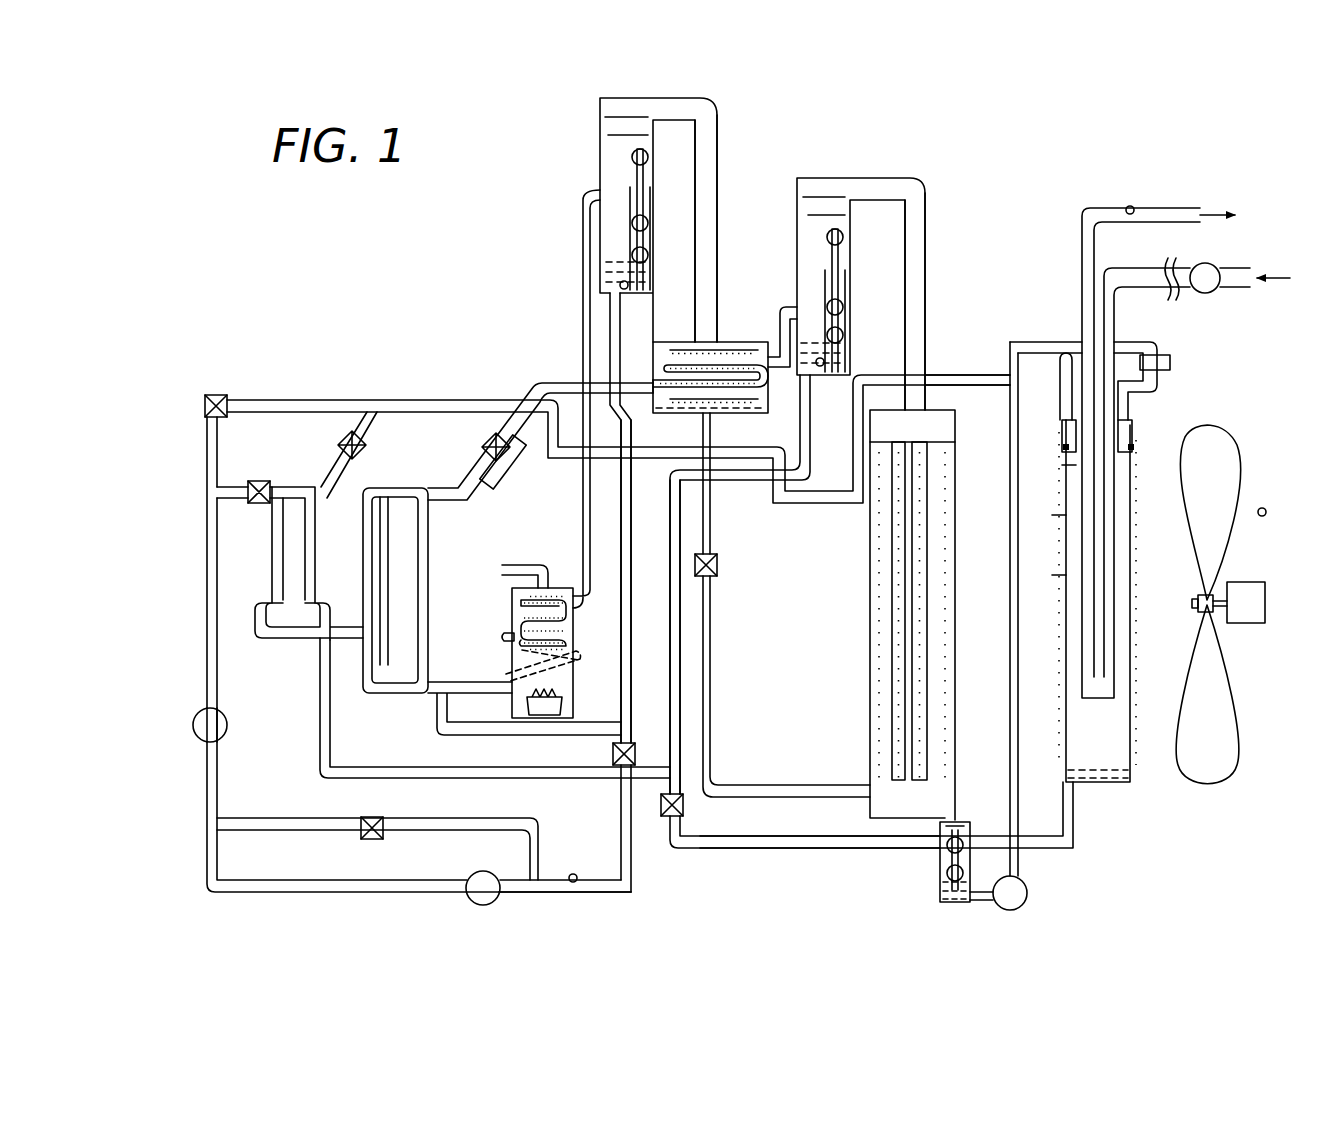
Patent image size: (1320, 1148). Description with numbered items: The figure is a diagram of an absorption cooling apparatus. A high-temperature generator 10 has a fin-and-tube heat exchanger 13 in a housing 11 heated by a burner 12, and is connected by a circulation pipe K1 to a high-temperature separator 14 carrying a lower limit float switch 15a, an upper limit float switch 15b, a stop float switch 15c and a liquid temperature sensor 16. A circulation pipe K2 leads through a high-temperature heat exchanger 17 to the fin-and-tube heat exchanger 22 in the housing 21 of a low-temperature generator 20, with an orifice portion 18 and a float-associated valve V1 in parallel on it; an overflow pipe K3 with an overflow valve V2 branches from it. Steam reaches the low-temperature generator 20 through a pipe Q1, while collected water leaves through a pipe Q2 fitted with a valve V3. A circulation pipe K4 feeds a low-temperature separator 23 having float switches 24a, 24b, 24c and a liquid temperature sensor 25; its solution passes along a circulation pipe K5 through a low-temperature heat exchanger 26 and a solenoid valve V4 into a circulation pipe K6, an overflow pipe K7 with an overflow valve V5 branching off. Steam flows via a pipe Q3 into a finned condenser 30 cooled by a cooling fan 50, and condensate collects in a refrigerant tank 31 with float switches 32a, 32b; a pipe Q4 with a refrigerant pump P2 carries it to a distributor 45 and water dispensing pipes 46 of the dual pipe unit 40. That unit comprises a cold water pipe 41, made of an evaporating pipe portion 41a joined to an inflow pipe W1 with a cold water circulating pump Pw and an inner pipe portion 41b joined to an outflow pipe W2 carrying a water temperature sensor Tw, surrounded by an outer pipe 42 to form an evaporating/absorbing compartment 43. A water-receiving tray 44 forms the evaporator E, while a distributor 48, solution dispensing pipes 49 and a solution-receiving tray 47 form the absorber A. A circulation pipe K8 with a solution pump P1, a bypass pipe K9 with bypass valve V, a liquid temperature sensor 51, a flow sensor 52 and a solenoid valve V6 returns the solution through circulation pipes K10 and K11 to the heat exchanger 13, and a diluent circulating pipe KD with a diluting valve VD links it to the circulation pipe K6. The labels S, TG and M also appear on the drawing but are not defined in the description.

The high-temperature generator 10 is at (520, 617).
The housing 11 is at (506, 598).
The burner 12 is at (526, 710).
The fin-and-tube heat exchanger 13 is at (506, 636).
The high-temperature separator 14 is at (597, 125).
The lower limit float switch 15a is at (648, 255).
The upper limit float switch 15b is at (648, 223).
The stop float switch 15c is at (648, 157).
The liquid temperature sensor 16 is at (626, 297).
The high-temperature heat exchanger 17 is at (430, 553).
The orifice portion 18 is at (512, 470).
The low-temperature generator 20 is at (710, 341).
The housing 21 is at (652, 376).
The fin-and-tube heat exchanger 22 is at (666, 342).
The low-temperature separator 23 is at (796, 176).
The lower limit float switch 24a is at (843, 335).
The upper limit float switch 24b is at (843, 307).
The stop float switch 24c is at (843, 237).
The liquid temperature sensor 25 is at (808, 380).
The low-temperature heat exchanger 26 is at (318, 540).
The condenser 30 is at (945, 406).
The refrigerant tank 31 is at (940, 890).
The lower limit float switch 32a is at (946, 873).
The upper limit float switch 32b is at (960, 820).
The dual pipe unit 40 is at (1107, 471).
The cold water pipe 41 is at (1120, 320).
The evaporating pipe portion 41a is at (1118, 531).
The inner pipe portion 41b is at (1081, 242).
The outer pipe 42 is at (1058, 517).
The evaporating/absorbing compartment 43 is at (1058, 571).
The water-receiving tray 44 is at (1130, 460).
The distributor 45 is at (1171, 358).
The water dispensing pipes 46 is at (1160, 386).
The solution-receiving tray 47 is at (1061, 468).
The distributor 48 is at (1060, 378).
The solution dispensing pipes 49 is at (1061, 432).
The cooling fan 50 is at (1240, 450).
The liquid temperature sensor 51 is at (574, 874).
The flow sensor 52 is at (226, 716).
The absorber A is at (1058, 398).
The evaporator E is at (1134, 406).
The diluent circulating pipe KD is at (206, 430).
The circulation pipe K1 is at (581, 478).
The circulation pipe K2 is at (620, 478).
The overflow pipe K3 is at (616, 781).
The circulation pipe K4 is at (786, 302).
The circulation pipe K5 is at (668, 526).
The circulation pipe K6 is at (400, 410).
The overflow pipe K7 is at (666, 820).
The circulation pipe K8 is at (762, 850).
The bypass pipe K9 is at (456, 818).
The circulation pipe K10 is at (312, 638).
The circulation pipe K11 is at (428, 694).
The pipe Q1 is at (718, 190).
The pipe Q2 is at (711, 634).
The pipe Q3 is at (927, 268).
The pipe Q4 is at (1020, 812).
The bypass valve V is at (378, 816).
The float-associated valve V1 is at (482, 447).
The overflow valve V2 is at (612, 753).
The valve V3 is at (718, 565).
The solenoid valve V4 is at (365, 450).
The overflow valve V5 is at (684, 805).
The solenoid valve V6 is at (266, 481).
The diluting valve VD is at (224, 394).
The sensor S is at (210, 725).
The solution pump P1 is at (548, 888).
The refrigerant pump P2 is at (1010, 893).
The cold water circulating pump Pw is at (1205, 278).
The water temperature sensor Tw is at (1131, 205).
The gas temperature sensor TG is at (1266, 509).
The inflow pipe W1 is at (1140, 265).
The outflow pipe W2 is at (1150, 200).
The motor M is at (1246, 602).